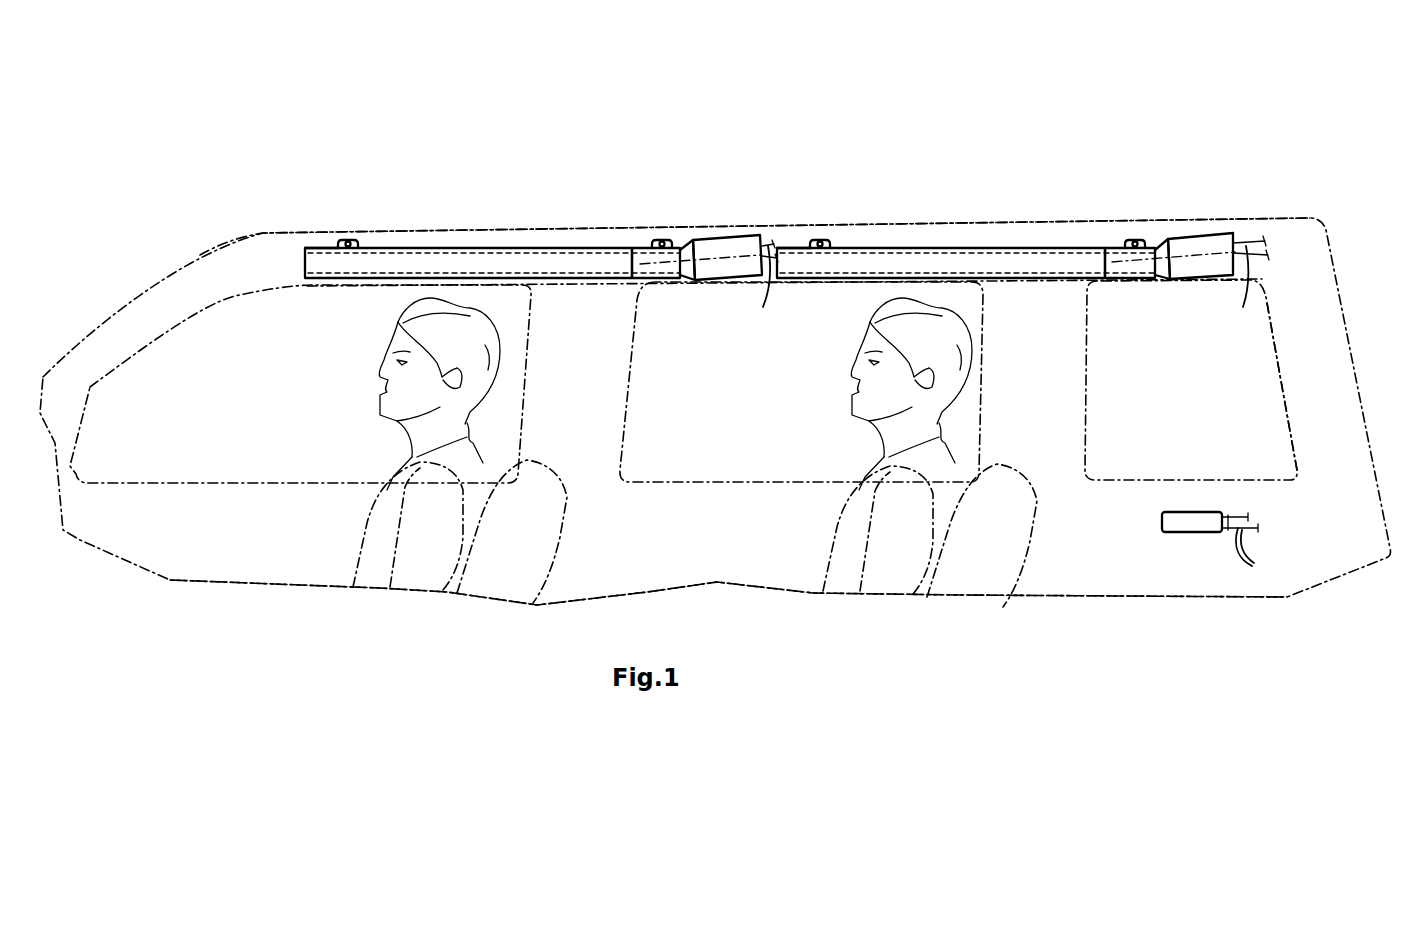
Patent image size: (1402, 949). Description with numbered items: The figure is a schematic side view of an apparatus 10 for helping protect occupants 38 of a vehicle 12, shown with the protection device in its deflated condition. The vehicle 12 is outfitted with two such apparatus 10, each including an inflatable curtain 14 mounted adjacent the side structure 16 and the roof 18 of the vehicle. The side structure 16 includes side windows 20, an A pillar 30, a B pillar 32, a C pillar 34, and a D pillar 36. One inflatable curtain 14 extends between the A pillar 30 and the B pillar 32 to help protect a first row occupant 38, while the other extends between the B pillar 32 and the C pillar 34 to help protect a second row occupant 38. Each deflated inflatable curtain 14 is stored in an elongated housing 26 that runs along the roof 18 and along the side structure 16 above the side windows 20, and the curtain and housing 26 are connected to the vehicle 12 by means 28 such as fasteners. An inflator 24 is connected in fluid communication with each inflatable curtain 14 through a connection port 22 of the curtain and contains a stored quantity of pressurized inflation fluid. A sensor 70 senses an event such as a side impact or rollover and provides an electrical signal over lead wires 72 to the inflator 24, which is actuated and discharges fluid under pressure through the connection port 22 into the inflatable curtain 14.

The apparatus 10 is at (290, 130).
The vehicle 12 is at (385, 118).
The inflatable curtain 14 is at (355, 285).
The side structure 16 is at (790, 585).
The roof 18 is at (598, 225).
The side windows 20 is at (160, 460).
The connection port 22 is at (658, 276).
The inflator 24 is at (712, 240).
The housing 26 is at (318, 250).
The means 28 is at (351, 241).
The A pillar 30 is at (125, 330).
The B pillar 32 is at (610, 380).
The C pillar 34 is at (1085, 380).
The D pillar 36 is at (1313, 367).
The occupant 38 is at (415, 545).
The sensor 70 is at (1190, 522).
The lead wires 72 is at (1020, 413).